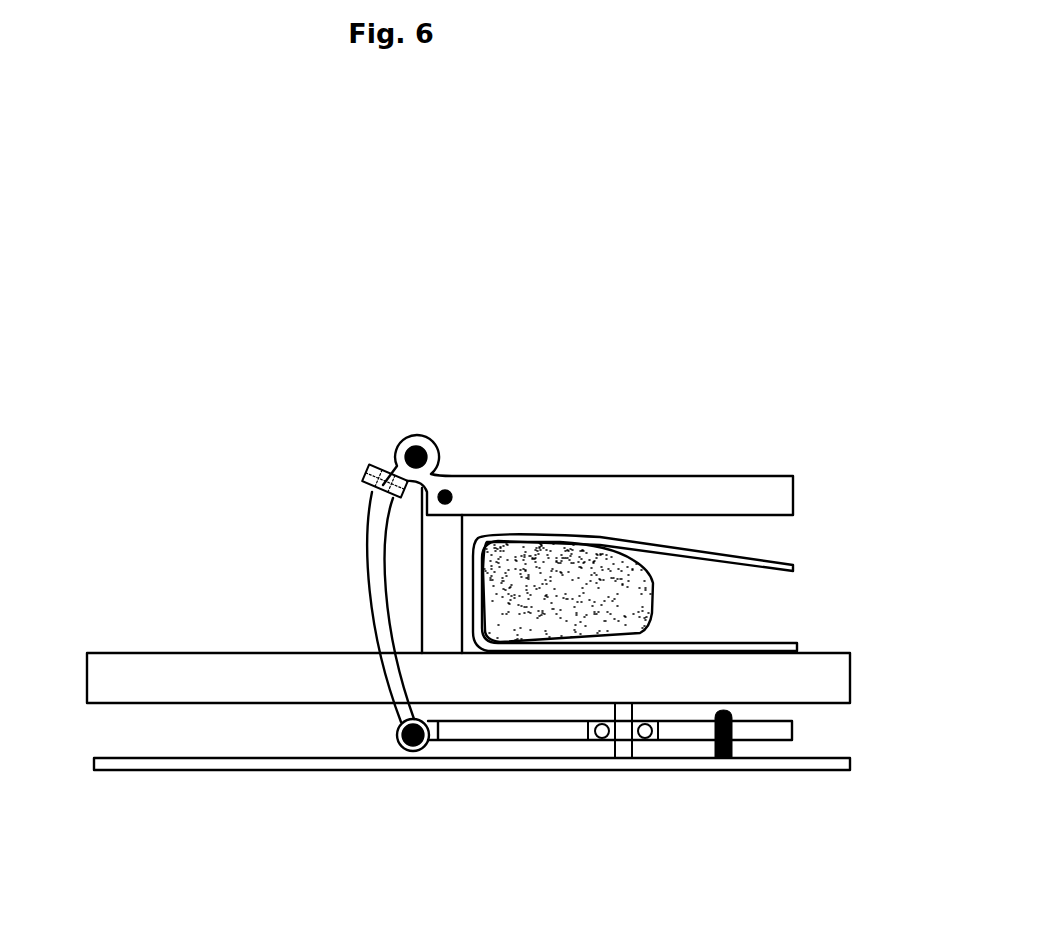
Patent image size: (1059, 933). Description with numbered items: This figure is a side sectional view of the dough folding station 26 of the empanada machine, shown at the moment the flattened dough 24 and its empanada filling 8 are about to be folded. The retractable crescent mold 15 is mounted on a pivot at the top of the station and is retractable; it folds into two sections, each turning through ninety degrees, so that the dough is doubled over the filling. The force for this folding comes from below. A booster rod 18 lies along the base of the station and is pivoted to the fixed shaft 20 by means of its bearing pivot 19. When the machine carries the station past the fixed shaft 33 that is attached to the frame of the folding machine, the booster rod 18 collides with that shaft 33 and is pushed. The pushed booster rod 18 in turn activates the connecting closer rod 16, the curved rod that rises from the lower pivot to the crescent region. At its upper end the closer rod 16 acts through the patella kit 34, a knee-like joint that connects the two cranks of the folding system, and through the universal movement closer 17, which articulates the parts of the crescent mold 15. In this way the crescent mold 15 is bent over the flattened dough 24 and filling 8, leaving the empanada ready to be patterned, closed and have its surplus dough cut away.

The empanada filling 8 is at (647, 617).
The retractable crescent mold 15 is at (607, 495).
The closer rod 16 is at (370, 553).
The universal movement closer 17 is at (385, 467).
The booster rod 18 is at (520, 736).
The pivot point for booster rod 19 is at (602, 740).
The fixed shaft 20 is at (624, 748).
The flattened dough 24 is at (737, 557).
The dough folding station 26 is at (565, 432).
The fixed shaft which activates the dough folding system 33 is at (735, 746).
The patella kit 34 is at (406, 748).